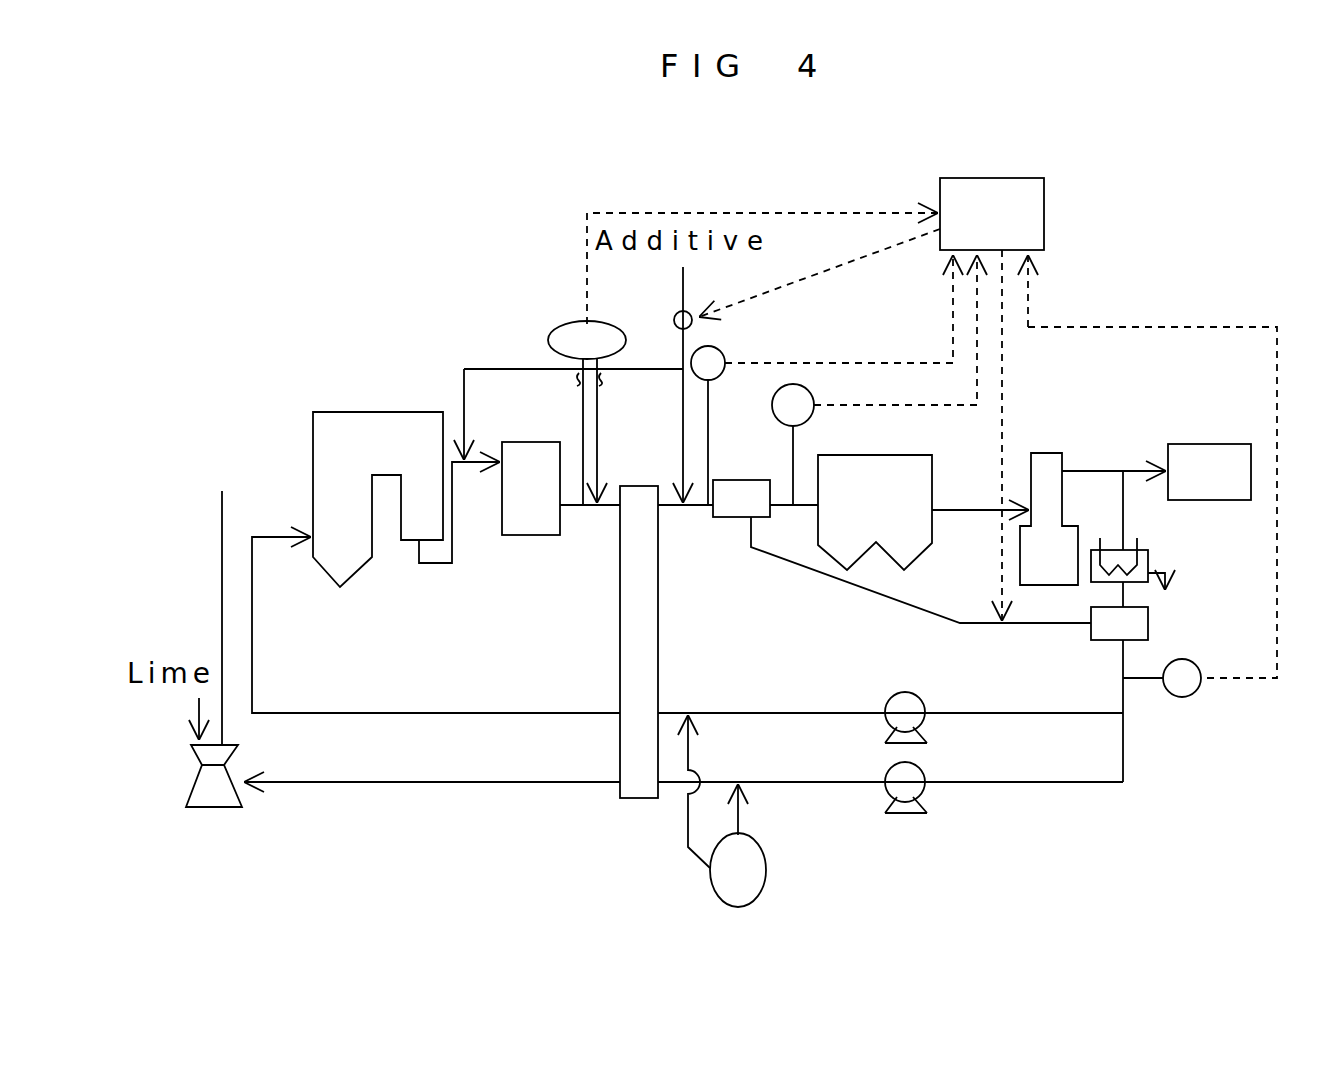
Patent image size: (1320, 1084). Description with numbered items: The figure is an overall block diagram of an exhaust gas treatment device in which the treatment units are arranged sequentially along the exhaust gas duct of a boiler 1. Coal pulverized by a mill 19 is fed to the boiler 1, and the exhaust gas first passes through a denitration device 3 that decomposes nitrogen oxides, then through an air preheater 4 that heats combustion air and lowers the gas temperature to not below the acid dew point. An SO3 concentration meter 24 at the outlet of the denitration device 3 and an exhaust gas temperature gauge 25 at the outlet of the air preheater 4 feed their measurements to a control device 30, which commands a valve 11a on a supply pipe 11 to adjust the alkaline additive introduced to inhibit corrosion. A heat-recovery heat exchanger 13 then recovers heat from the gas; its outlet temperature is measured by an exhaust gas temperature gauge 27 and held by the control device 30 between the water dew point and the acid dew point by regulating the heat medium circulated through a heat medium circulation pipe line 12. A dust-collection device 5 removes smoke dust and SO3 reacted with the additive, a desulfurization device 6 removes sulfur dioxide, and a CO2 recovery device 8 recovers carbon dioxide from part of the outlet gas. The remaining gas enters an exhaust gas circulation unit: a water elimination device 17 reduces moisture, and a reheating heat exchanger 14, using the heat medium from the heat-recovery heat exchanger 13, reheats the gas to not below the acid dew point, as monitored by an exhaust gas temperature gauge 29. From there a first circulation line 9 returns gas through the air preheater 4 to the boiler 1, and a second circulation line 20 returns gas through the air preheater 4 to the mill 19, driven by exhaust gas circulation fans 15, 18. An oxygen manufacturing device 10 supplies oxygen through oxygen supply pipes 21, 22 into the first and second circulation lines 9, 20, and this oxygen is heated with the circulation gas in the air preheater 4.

The boiler 1 is at (407, 412).
The denitration device 3 is at (548, 442).
The air preheater 4 is at (628, 486).
The dust-collection device 5 is at (890, 455).
The desulfurization device 6 is at (1048, 453).
The CO2 recovery device 8 is at (1197, 444).
The first circulation line 9 is at (797, 713).
The oxygen manufacturing device 10 is at (757, 888).
The alkaline additive supply pipe 11 is at (683, 287).
The additive supply adjusting valve 11a is at (673, 322).
The heat medium circulation pipe line 12 is at (823, 573).
The heat-recovery heat exchanger 13 is at (730, 480).
The reheating heat exchanger 14 is at (1148, 625).
The exhaust gas circulation fan 15 is at (925, 718).
The water elimination device 17 is at (1150, 558).
The exhaust gas circulation fan 18 is at (920, 795).
The mill 19 is at (210, 810).
The second circulation line 20 is at (828, 782).
The oxygen supply pipe 21 is at (688, 750).
The oxygen supply pipe 22 is at (738, 820).
The SO3 concentration meter 24 is at (548, 343).
The exhaust gas temperature gauge 25 is at (718, 350).
The exhaust gas temperature gauge 27 is at (798, 387).
The exhaust gas temperature gauge 29 is at (1182, 697).
The control device 30 is at (978, 178).